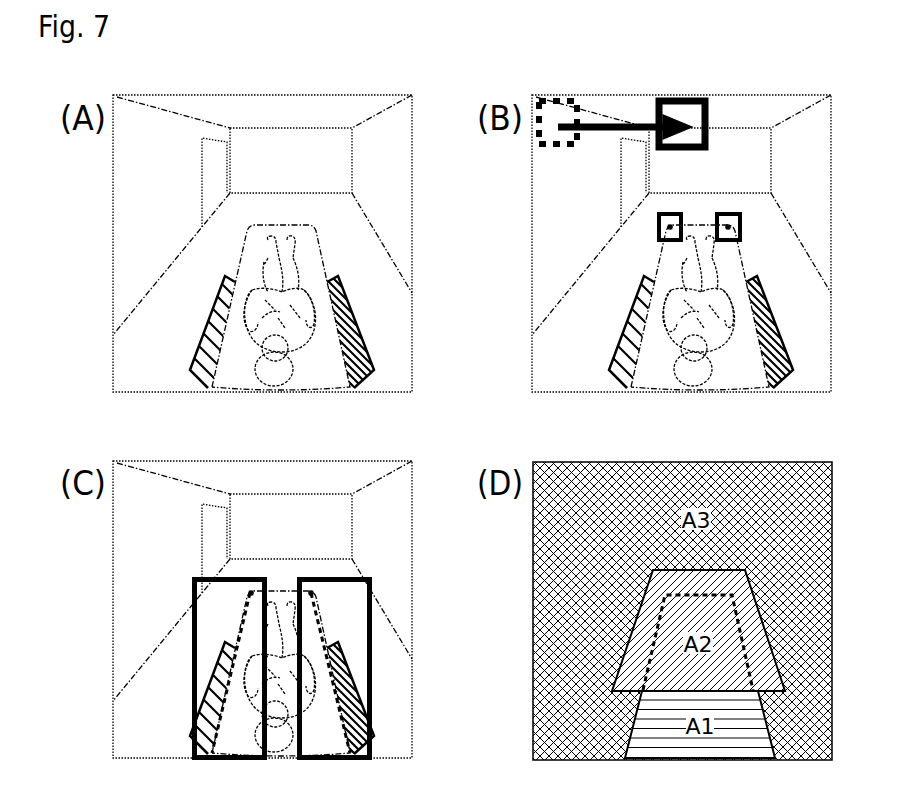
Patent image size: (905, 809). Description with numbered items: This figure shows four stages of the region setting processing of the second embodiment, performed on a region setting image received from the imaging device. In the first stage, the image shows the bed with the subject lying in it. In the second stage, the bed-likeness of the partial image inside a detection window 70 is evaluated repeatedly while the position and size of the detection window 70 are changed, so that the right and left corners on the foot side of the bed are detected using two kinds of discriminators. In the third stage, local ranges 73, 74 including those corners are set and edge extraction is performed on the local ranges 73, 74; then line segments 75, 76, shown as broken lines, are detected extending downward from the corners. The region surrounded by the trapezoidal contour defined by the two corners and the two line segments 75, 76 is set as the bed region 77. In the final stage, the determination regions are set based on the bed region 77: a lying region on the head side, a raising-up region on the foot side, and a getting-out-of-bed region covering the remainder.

The detection window 70 is at (681, 96).
The local range 73 is at (192, 606).
The local range 74 is at (372, 604).
The line segment 75 is at (238, 634).
The line segment 76 is at (324, 634).
The bed region 77 is at (655, 643).